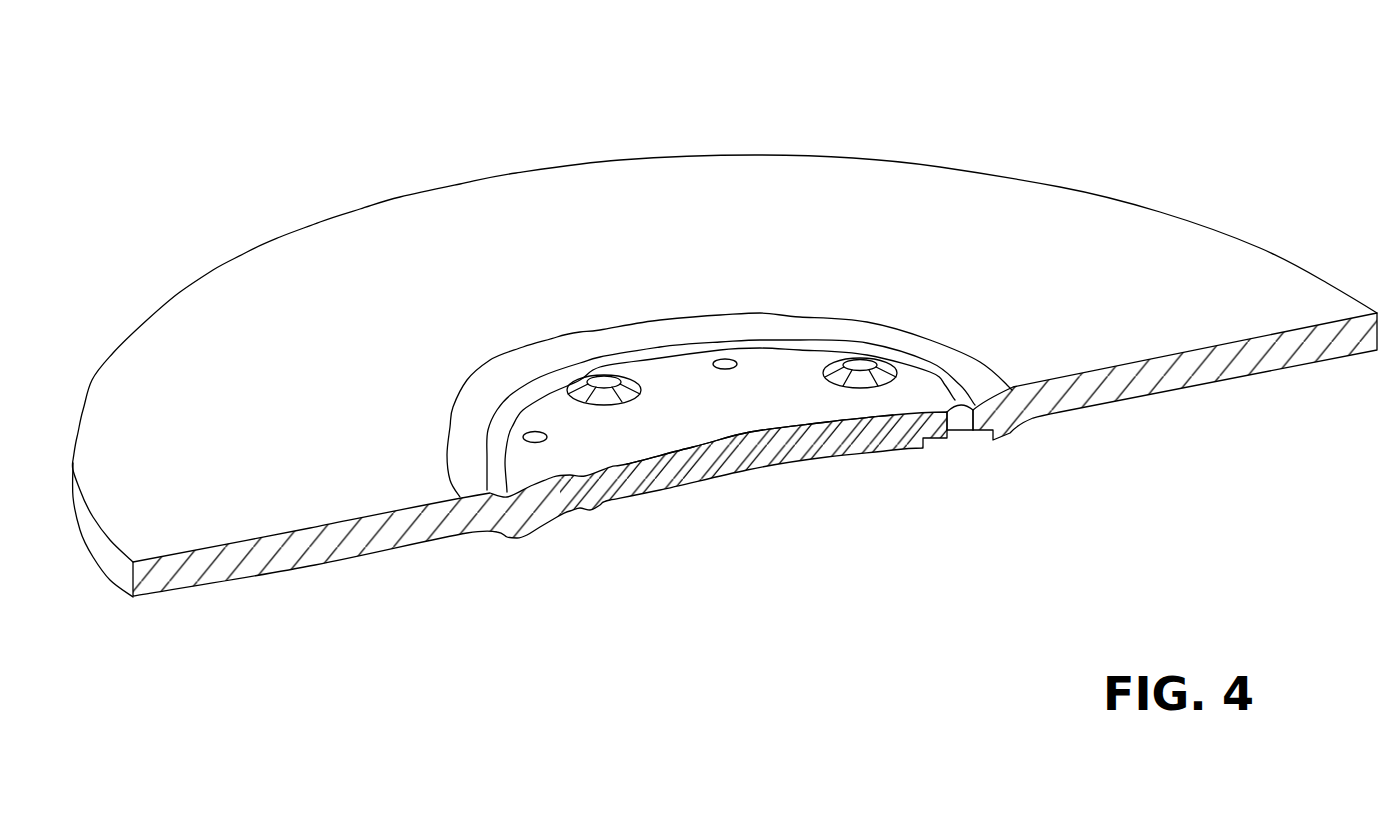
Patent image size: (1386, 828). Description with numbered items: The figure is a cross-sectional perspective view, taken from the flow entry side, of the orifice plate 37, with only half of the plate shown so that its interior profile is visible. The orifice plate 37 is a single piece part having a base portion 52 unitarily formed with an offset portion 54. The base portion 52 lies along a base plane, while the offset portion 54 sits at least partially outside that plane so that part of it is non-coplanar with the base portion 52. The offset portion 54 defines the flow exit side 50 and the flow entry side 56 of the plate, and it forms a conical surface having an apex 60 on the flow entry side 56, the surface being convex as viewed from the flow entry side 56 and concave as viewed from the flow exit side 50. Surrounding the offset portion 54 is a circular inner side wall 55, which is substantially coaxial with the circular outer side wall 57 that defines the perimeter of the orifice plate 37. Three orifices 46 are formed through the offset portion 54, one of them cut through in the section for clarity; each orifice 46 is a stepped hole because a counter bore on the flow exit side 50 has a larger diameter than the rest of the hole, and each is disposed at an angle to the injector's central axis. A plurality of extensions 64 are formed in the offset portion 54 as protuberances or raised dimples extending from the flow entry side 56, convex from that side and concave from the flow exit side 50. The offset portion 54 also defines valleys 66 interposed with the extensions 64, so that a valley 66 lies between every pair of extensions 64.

The orifice plate 37 is at (985, 136).
The base portion 52 is at (1133, 248).
The circular outer side wall 57 is at (375, 206).
The flow exit side 50 is at (617, 507).
The offset portion 54 is at (820, 408).
The circular inner side wall 55 is at (497, 492).
The flow entry side 56 is at (693, 370).
The apex 60 is at (750, 430).
The valleys 66 is at (773, 365).
The orifices 46 is at (537, 432).
The extensions 64 is at (605, 380).